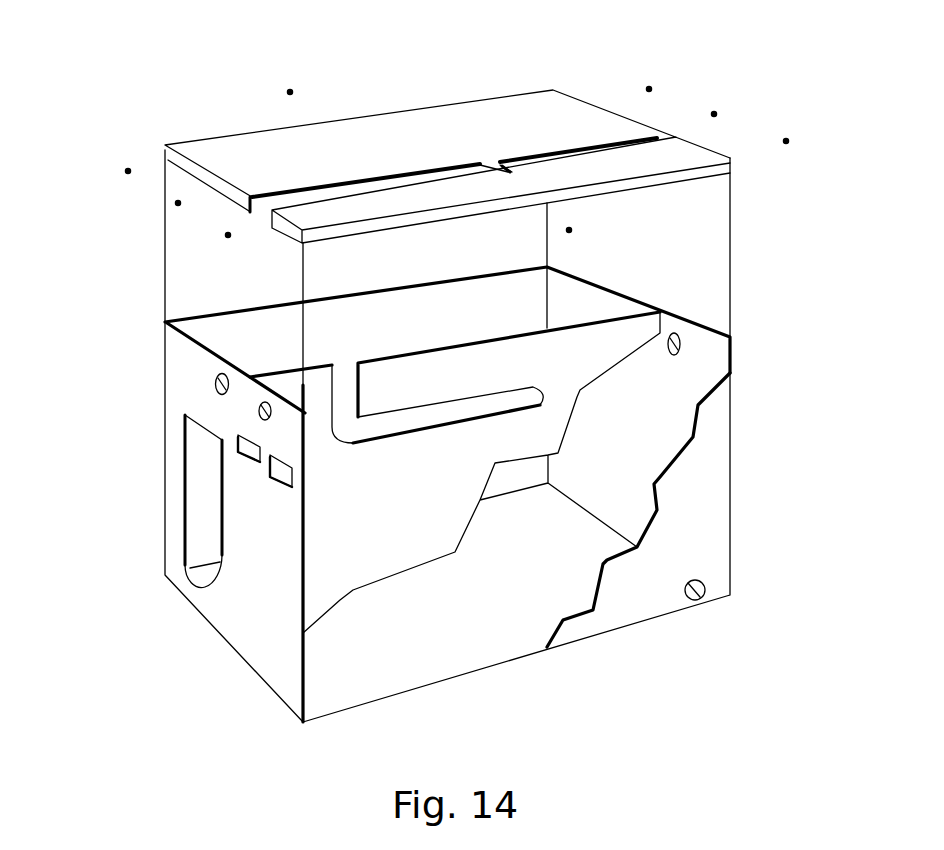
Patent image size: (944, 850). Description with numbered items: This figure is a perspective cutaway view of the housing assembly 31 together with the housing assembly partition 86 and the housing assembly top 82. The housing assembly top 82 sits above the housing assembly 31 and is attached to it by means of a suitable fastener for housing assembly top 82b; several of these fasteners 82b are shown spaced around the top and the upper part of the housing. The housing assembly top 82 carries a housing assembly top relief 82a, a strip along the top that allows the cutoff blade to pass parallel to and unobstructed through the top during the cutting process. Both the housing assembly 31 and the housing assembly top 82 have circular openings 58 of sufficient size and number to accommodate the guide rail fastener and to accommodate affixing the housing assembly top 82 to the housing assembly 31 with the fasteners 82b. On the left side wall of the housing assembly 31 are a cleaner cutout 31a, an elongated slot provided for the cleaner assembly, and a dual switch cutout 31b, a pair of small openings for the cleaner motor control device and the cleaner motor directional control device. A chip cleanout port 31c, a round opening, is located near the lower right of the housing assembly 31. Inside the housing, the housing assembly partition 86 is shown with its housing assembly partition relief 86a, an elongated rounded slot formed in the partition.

The housing assembly 31 is at (180, 393).
The cleaner cutout 31a is at (200, 510).
The dual switch cutout 31b is at (280, 483).
The chip cleanout port 31c is at (702, 585).
The circular openings 58 is at (262, 402).
The housing assembly top 82 is at (423, 128).
The housing assembly top relief 82a is at (380, 178).
The fastener for housing assembly top 82b is at (287, 90).
The housing assembly partition 86 is at (538, 348).
The housing assembly partition relief 86a is at (445, 413).